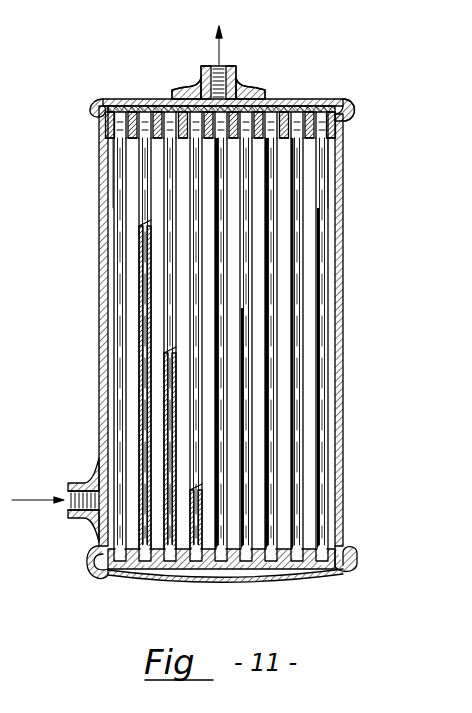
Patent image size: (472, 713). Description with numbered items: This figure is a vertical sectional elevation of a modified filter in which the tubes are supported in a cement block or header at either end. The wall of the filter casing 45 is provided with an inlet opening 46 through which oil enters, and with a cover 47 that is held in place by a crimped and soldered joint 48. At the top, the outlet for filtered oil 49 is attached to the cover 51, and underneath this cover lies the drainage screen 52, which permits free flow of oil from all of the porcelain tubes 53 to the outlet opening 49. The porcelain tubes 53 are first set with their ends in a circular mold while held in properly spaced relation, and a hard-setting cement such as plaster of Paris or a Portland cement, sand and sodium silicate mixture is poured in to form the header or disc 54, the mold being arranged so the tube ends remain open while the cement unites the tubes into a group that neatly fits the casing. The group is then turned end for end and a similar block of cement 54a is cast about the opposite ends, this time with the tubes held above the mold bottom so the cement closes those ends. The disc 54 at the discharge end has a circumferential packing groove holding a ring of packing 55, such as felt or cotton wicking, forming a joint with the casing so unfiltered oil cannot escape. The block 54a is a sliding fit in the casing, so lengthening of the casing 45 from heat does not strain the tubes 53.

The wall of the filter casing 45 is at (91, 368).
The inlet opening 46 is at (62, 486).
The cover 47 is at (285, 570).
The crimped and soldered joint 48 is at (346, 546).
The outlet for filtered oil 49 is at (209, 60).
The cover 51 is at (268, 96).
The drainage screen 52 is at (312, 95).
The porcelain tubes 53 is at (290, 272).
The header or disc 54 is at (104, 128).
The block of cement 54a is at (300, 560).
The packing 55 is at (101, 118).